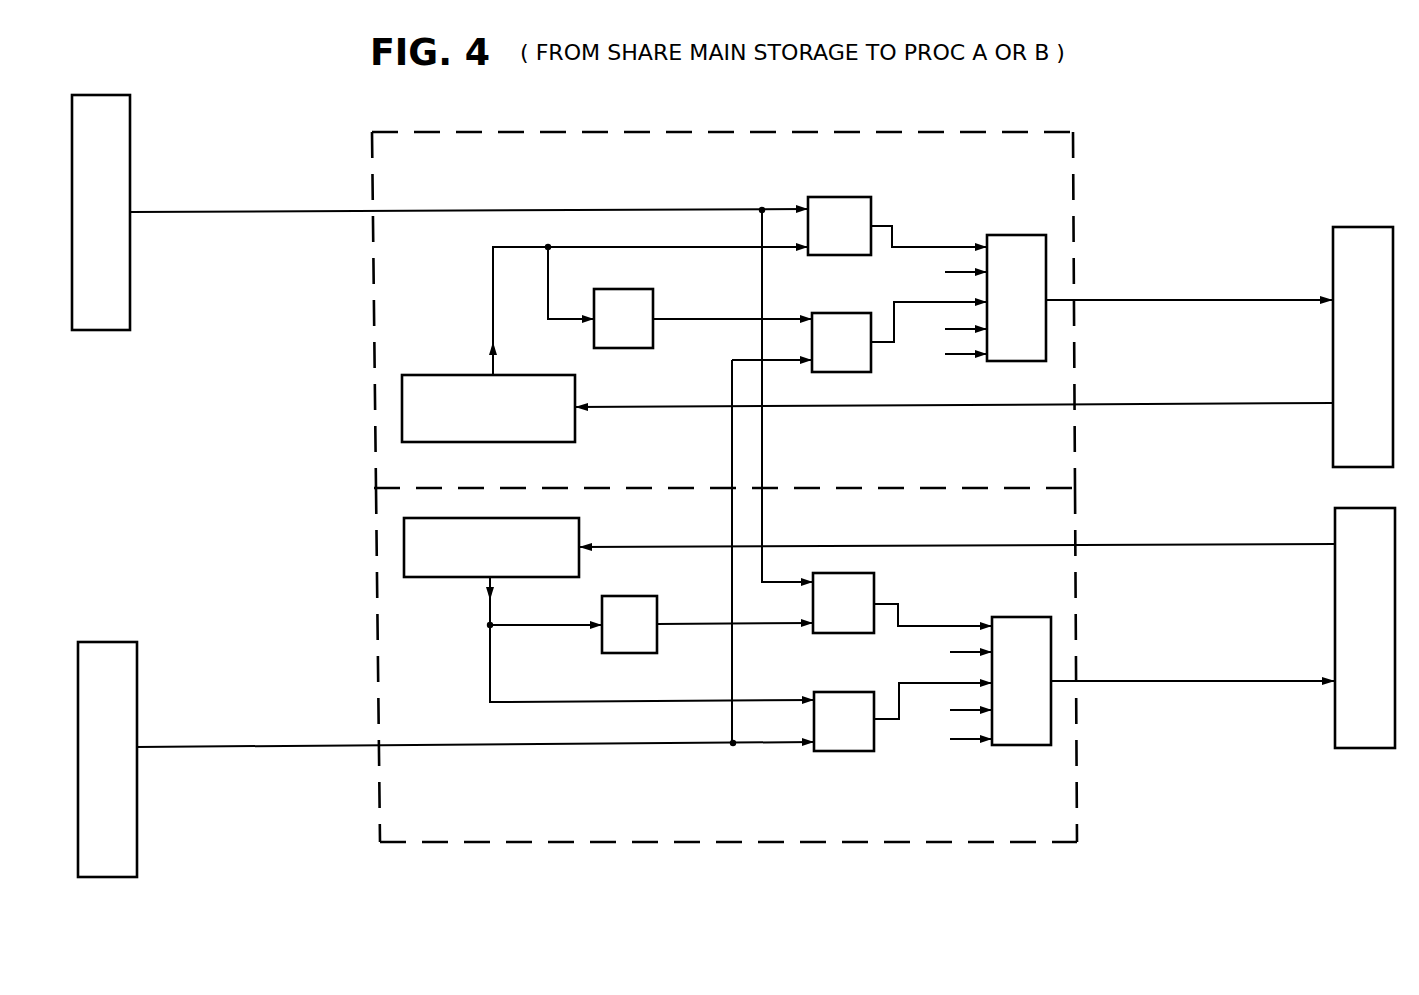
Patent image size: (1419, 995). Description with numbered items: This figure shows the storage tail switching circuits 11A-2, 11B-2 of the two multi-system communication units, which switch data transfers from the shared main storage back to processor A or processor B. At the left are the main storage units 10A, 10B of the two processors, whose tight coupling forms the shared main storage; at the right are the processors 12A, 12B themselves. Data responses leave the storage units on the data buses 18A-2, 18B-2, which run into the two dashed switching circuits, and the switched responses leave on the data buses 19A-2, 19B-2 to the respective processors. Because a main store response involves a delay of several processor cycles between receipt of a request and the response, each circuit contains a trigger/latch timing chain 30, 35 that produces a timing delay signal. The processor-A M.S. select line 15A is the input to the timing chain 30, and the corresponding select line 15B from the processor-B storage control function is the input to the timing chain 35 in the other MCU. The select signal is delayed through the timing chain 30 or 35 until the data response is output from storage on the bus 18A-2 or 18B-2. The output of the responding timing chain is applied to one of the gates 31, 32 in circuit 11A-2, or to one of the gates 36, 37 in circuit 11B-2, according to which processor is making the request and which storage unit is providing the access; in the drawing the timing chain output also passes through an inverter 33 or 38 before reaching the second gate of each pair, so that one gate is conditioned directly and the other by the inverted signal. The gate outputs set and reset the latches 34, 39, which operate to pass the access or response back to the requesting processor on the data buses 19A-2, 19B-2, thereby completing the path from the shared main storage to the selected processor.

The main storage unit 10A is at (113, 95).
The main storage unit 10B is at (113, 642).
The processor 12A is at (1355, 227).
The processor 12B is at (1372, 748).
The processor select line 15A is at (1301, 404).
The processor select line 15B is at (1304, 545).
The data bus 18A-2 is at (331, 194).
The data bus 18B-2 is at (318, 742).
The data bus 19A-2 is at (1293, 300).
The data bus 19B-2 is at (1295, 682).
The storage tail switching circuit 11A-2 is at (940, 484).
The storage tail switching circuit 11B-2 is at (747, 826).
The trigger/latch timing chain 30 is at (438, 375).
The gate 31 is at (840, 197).
The gate 32 is at (837, 313).
The inverter 33 is at (620, 289).
The latch 34 is at (1012, 235).
The trigger/latch timing chain 35 is at (447, 577).
The gate 36 is at (866, 577).
The gate 37 is at (855, 692).
The inverter 38 is at (638, 596).
The latch 39 is at (1013, 617).